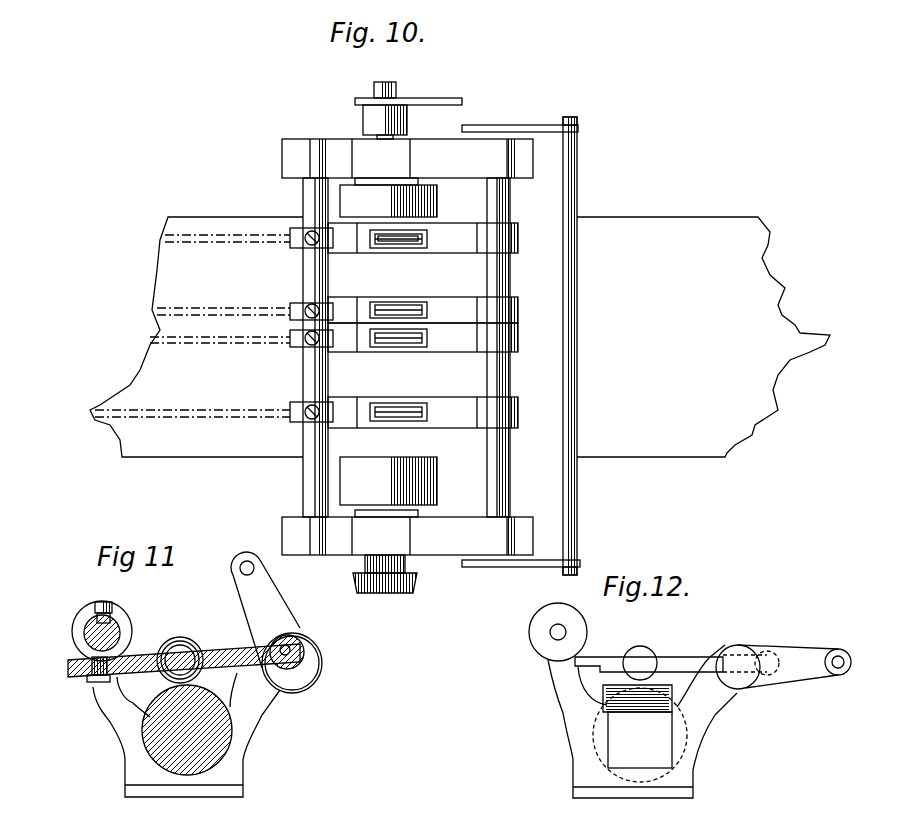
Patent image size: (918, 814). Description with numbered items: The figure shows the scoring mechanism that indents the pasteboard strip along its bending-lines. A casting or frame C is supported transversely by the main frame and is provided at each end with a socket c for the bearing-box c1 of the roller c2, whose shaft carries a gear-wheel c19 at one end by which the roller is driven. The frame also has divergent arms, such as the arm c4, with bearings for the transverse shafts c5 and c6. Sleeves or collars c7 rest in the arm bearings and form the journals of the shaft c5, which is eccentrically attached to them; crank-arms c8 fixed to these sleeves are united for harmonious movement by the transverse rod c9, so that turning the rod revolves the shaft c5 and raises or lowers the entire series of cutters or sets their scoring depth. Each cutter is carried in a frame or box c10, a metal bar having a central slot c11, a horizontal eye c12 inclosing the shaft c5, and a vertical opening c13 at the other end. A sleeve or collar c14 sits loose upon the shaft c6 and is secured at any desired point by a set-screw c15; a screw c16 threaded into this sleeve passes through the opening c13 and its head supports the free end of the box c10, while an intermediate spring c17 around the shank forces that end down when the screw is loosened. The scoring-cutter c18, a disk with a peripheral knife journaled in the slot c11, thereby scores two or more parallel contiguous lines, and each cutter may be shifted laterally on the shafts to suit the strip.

In FIG. 10, the casting or frame C is at (407, 536).
In FIG. 12, the casting or frame C is at (700, 728).
In FIG. 12, the socket c is at (672, 752).
In FIG. 10, the bearing-box c1 is at (407, 341).
In FIG. 12, the bearing-box c1 is at (640, 740).
In FIG. 10, the roller c2 is at (388, 481).
In FIG. 12, the roller c2 is at (628, 694).
In FIG. 11, the divergent arm c4 is at (86, 615).
In FIG. 12, the divergent arm c4 is at (530, 633).
In FIG. 10, the transverse shaft c5 is at (508, 210).
In FIG. 11, the transverse shaft c5 is at (276, 628).
In FIG. 12, the transverse shaft c5 is at (767, 663).
In FIG. 10, the transverse shaft c6 is at (304, 347).
In FIG. 11, the transverse shaft c6 is at (92, 630).
In FIG. 12, the transverse shaft c6 is at (567, 631).
In FIG. 10, the sleeve or collar c7 is at (525, 557).
In FIG. 11, the sleeve or collar c7 is at (305, 665).
In FIG. 11, the crank-arm c8 is at (300, 635).
In FIG. 12, the crank-arm c8 is at (735, 648).
In FIG. 10, the transverse rod c9 is at (578, 205).
In FIG. 12, the transverse rod c9 is at (838, 653).
In FIG. 10, the frame or box c10 is at (420, 325).
In FIG. 11, the frame or box c10 is at (184, 653).
In FIG. 12, the frame or box c10 is at (649, 657).
In FIG. 10, the central slot c11 is at (427, 240).
In FIG. 11, the central slot c11 is at (182, 727).
In FIG. 10, the horizontal eye c12 is at (520, 240).
In FIG. 11, the horizontal eye c12 is at (295, 648).
In FIG. 11, the vertical opening c13 is at (90, 662).
In FIG. 10, the sleeve or collar c14 is at (310, 228).
In FIG. 11, the sleeve or collar c14 is at (118, 628).
In FIG. 10, the set-screw c15 is at (300, 242).
In FIG. 11, the set-screw c15 is at (106, 596).
In FIG. 11, the screw c16 is at (100, 682).
In FIG. 11, the intermediate spring c17 is at (175, 645).
In FIG. 10, the scoring-cutter c18 is at (432, 222).
In FIG. 11, the scoring-cutter c18 is at (188, 645).
In FIG. 12, the scoring-cutter c18 is at (650, 653).
In FIG. 10, the gear-wheel c19 is at (412, 585).